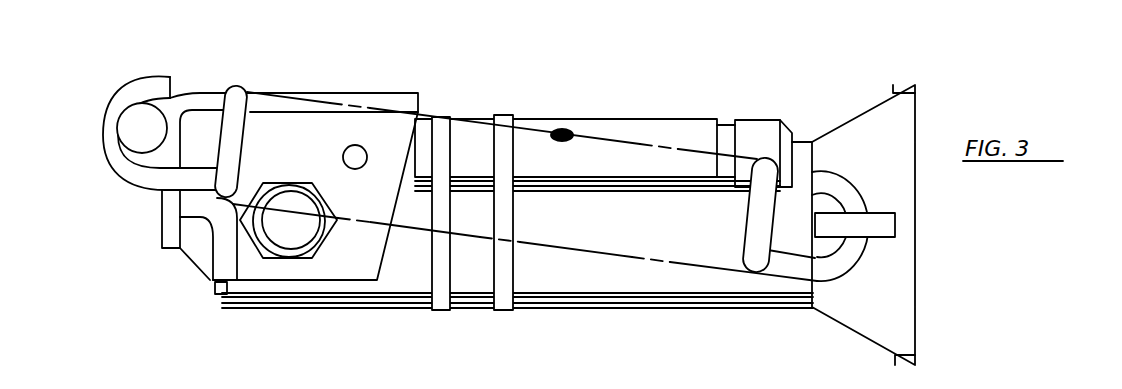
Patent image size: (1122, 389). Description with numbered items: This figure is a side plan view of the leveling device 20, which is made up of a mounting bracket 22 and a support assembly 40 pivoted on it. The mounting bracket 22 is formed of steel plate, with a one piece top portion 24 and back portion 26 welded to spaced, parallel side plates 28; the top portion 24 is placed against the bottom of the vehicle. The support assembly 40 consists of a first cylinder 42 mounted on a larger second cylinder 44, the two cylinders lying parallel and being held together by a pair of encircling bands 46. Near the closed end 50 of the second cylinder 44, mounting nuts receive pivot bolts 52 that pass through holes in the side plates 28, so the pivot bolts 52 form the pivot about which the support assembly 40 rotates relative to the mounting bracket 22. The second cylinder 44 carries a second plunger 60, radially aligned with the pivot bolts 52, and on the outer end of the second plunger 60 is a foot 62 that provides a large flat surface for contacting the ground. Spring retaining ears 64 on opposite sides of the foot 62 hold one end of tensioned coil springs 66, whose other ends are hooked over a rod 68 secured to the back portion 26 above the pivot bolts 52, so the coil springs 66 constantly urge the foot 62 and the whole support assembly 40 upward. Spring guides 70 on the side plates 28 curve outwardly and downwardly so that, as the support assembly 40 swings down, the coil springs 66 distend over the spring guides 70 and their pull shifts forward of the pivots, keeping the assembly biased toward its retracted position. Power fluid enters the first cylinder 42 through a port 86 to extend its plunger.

The leveling device 20 is at (435, 102).
The mounting bracket 22 is at (369, 91).
The top portion 24 is at (313, 105).
The back portion 26 is at (170, 209).
The side plates 28 is at (347, 262).
The support assembly 40 is at (803, 127).
The first cylinder 42 is at (597, 155).
The second cylinder 44 is at (517, 292).
The encircling bands 46 is at (505, 307).
The closed end 50 is at (222, 291).
The pivot bolts 52 is at (289, 245).
The second plunger 60 is at (358, 150).
The foot 62 is at (903, 268).
The spring retaining ears 64 is at (903, 226).
The coil springs 66 is at (756, 258).
The rod 68 is at (127, 118).
The spring guides 70 is at (222, 238).
The port 86 is at (566, 132).